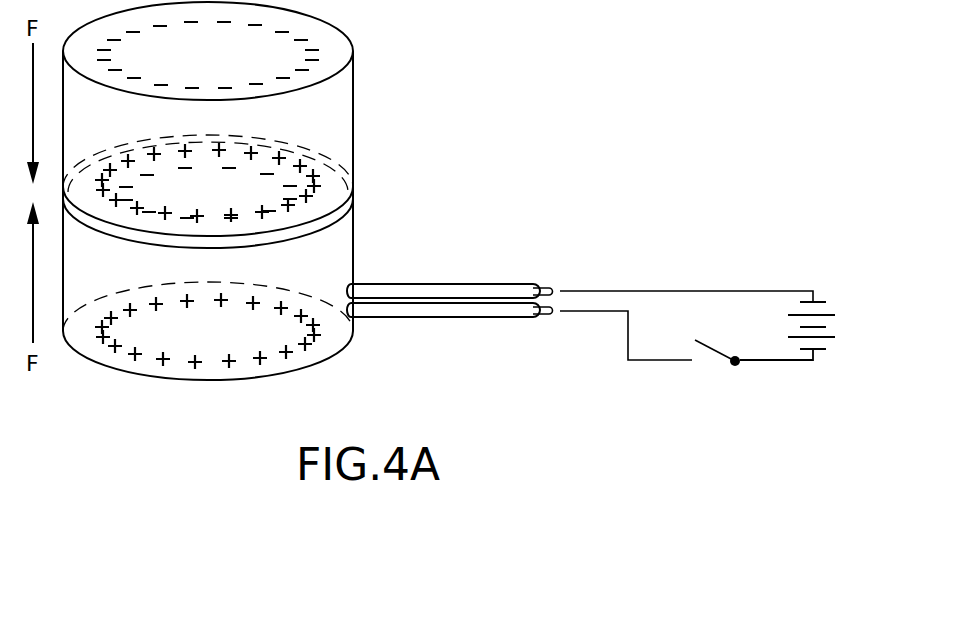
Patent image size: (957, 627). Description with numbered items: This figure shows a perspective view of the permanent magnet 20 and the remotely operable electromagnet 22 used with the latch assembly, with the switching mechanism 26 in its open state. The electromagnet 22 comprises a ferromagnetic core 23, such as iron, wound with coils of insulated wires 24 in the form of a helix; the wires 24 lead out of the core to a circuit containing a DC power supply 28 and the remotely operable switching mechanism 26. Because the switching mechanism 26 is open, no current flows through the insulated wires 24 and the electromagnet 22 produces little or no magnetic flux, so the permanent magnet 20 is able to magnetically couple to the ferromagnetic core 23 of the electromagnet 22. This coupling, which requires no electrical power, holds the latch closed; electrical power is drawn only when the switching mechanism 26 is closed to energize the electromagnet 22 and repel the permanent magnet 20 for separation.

The permanent magnet 20 is at (343, 108).
The electromagnet 22 is at (454, 340).
The ferromagnetic core 23 is at (338, 343).
The insulated wires 24 is at (485, 284).
The remotely operable switching mechanism 26 is at (717, 352).
The DC power supply 28 is at (830, 306).